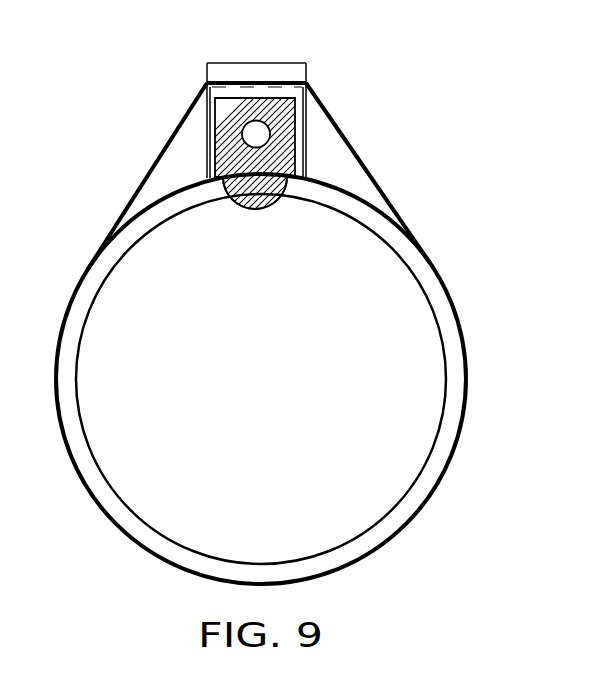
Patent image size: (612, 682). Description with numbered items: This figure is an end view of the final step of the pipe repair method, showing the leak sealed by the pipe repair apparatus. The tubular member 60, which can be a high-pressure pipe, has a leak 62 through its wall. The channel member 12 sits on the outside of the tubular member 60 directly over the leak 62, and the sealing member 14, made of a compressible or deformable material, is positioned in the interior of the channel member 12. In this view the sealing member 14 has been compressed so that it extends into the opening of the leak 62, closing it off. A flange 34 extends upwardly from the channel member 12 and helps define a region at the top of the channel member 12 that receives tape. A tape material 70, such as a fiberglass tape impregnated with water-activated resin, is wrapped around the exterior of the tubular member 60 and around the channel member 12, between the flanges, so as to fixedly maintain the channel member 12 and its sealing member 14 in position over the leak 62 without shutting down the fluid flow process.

The channel member 12 is at (205, 149).
The sealing member 14 is at (290, 108).
The flange 34 is at (259, 63).
The tubular member 60 is at (351, 556).
The leak 62 is at (256, 207).
The tape material 70 is at (375, 180).